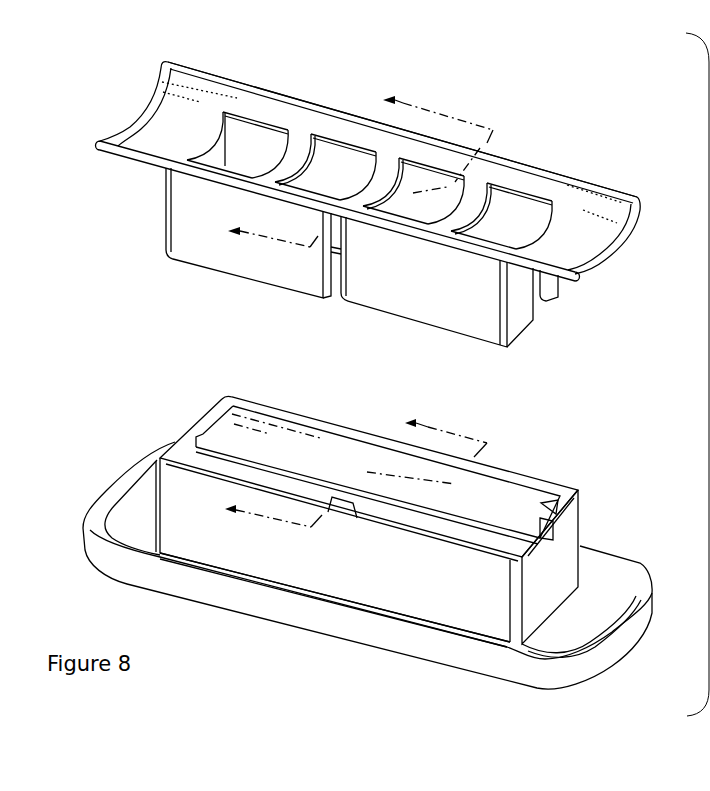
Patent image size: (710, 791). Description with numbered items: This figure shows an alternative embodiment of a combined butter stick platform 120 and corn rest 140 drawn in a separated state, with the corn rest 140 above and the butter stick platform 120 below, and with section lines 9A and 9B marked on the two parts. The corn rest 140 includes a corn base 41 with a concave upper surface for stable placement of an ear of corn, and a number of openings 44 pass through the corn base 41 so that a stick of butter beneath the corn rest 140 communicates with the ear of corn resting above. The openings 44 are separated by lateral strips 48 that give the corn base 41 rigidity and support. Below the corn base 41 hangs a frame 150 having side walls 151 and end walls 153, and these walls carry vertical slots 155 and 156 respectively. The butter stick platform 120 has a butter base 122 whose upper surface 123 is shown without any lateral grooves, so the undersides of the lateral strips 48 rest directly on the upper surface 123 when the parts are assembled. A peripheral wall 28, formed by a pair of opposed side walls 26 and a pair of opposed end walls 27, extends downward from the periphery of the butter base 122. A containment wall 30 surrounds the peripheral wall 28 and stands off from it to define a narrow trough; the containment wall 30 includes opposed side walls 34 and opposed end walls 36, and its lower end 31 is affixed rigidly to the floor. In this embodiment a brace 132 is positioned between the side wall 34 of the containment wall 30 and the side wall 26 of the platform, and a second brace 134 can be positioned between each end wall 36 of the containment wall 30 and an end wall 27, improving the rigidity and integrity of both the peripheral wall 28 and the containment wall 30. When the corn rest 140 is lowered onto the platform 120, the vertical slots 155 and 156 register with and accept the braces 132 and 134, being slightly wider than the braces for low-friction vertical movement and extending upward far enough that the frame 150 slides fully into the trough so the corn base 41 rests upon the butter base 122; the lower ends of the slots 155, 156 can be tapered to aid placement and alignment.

The corn rest 140 is at (570, 172).
The corn base 41 is at (280, 110).
The lateral strips 48 is at (337, 130).
The openings 44 is at (420, 183).
The frame 150 is at (142, 228).
The vertical slots 155 is at (328, 306).
The side walls 151 is at (385, 310).
The end walls 153 is at (520, 320).
The vertical slots 156 is at (553, 315).
The butter stick platform 120 is at (583, 459).
The butter base 122 is at (217, 440).
The upper surface 123 is at (482, 480).
The side walls 26 is at (236, 469).
The end walls 27 is at (579, 491).
The peripheral wall 28 is at (430, 523).
The containment wall 30 is at (259, 558).
The lower end 31 is at (165, 483).
The side walls 34 is at (183, 571).
The end walls 36 is at (540, 599).
The brace 132 is at (368, 520).
The second brace 134 is at (545, 540).
The section line 9A is at (360, 165).
The section line 9B is at (353, 474).